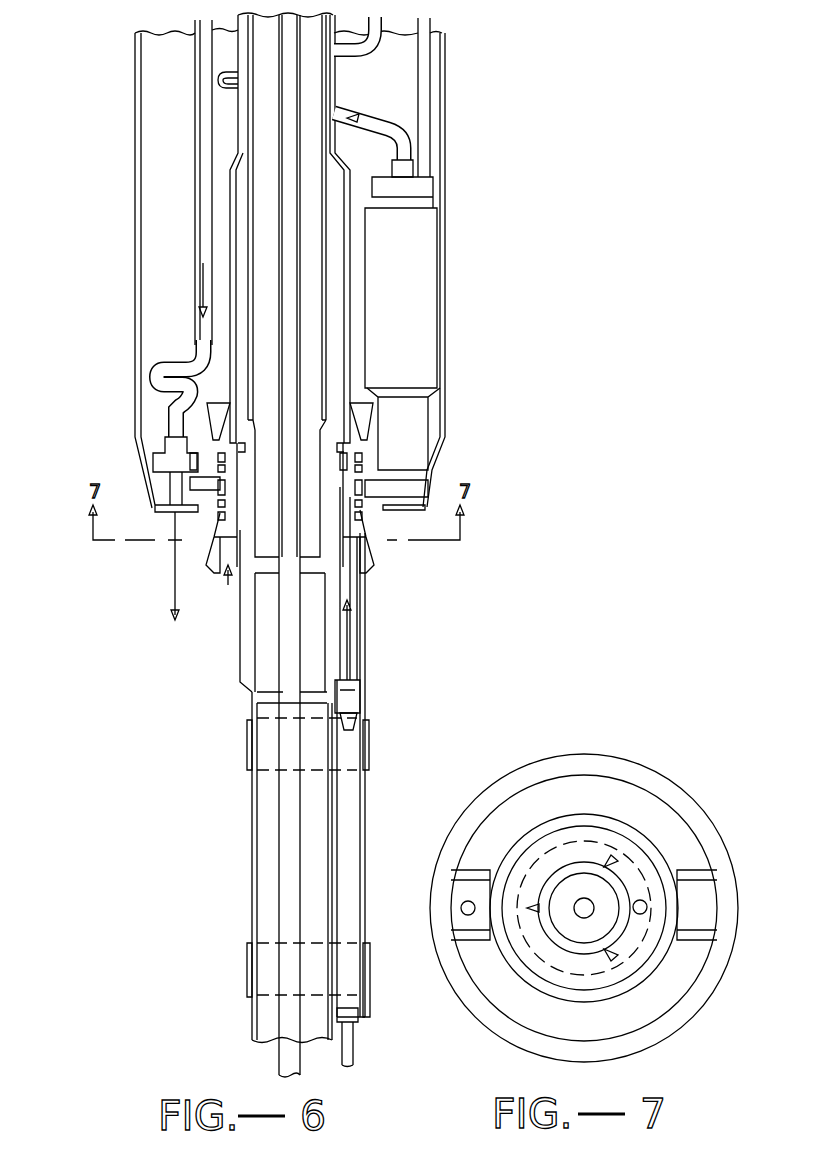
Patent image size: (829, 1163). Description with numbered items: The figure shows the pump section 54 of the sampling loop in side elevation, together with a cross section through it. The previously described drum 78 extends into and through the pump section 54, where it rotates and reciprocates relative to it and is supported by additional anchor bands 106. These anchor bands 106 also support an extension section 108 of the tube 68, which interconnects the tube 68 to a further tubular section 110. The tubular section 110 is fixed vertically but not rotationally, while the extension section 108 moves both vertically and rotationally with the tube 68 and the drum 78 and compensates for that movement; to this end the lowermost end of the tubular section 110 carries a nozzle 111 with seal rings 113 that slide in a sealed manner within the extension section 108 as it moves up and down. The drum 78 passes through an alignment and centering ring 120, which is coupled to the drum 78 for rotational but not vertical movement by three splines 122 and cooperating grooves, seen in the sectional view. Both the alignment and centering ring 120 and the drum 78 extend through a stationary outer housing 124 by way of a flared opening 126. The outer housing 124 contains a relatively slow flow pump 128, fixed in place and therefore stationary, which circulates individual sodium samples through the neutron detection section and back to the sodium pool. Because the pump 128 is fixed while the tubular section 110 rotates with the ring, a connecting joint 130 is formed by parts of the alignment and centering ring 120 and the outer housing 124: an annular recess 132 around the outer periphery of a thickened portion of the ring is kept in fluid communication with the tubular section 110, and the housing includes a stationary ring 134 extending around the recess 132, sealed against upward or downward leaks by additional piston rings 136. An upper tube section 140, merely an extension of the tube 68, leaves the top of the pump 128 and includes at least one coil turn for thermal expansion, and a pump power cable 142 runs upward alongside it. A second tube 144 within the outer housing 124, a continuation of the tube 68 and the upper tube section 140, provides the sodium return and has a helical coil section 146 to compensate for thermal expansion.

In FIG. 6, the pump section 54 is at (473, 397).
In FIG. 6, the tube 68 is at (353, 1050).
In FIG. 6, the drum 78 is at (252, 850).
In FIG. 6, the anchor bands 106 is at (248, 740).
In FIG. 6, the extension section 108 is at (363, 825).
In FIG. 6, the tubular section 110 is at (357, 650).
In FIG. 6, the nozzle 111 is at (350, 722).
In FIG. 6, the seal rings 113 is at (355, 698).
In FIG. 6, the alignment and centering ring 120 is at (343, 325).
In FIG. 7, the splines 122 is at (617, 867).
In FIG. 6, the outer housing 124 is at (448, 355).
In FIG. 6, the flared opening 126 is at (375, 565).
In FIG. 6, the slow flow pump 128 is at (423, 263).
In FIG. 6, the connecting joint 130 is at (228, 578).
In FIG. 6, the annular recess 132 is at (217, 487).
In FIG. 6, the stationary ring 134 is at (425, 485).
In FIG. 6, the piston rings 136 is at (217, 472).
In FIG. 6, the upper tube section 140 is at (380, 122).
In FIG. 6, the pump power cable 142 is at (425, 157).
In FIG. 6, the second tube 144 is at (202, 222).
In FIG. 6, the helical coil section 146 is at (170, 363).